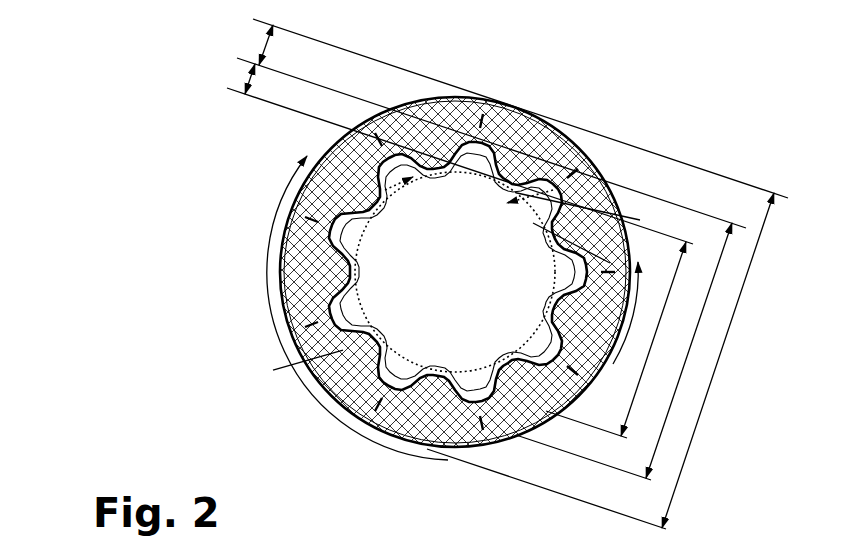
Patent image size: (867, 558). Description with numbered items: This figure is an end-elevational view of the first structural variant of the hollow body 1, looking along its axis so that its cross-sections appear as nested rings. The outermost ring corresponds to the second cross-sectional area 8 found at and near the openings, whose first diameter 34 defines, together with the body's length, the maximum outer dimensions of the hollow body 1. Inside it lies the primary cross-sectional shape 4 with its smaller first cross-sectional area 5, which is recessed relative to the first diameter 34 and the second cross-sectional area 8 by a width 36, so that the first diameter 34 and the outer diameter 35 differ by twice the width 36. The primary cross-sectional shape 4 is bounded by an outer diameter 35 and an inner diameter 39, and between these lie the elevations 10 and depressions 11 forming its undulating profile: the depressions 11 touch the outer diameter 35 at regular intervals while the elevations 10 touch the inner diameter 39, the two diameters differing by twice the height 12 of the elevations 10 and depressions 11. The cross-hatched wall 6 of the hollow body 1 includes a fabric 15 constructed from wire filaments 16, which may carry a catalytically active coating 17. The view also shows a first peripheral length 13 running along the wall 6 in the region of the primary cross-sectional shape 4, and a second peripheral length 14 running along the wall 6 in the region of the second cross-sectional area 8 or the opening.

The hollow body 1 is at (612, 60).
The primary cross-sectional shape 4 is at (400, 350).
The first cross-sectional area 5 is at (355, 411).
The wall 6 is at (457, 103).
The second cross-sectional area 8 is at (582, 147).
The elevations 10 is at (433, 173).
The depressions 11 is at (483, 150).
The height 12 is at (250, 77).
The first peripheral length 13 is at (290, 363).
The second peripheral length 14 is at (263, 298).
The fabric 15 is at (477, 115).
The wire filaments 16 is at (605, 183).
The coating 17 is at (603, 230).
The first diameter 34 is at (667, 473).
The outer diameter 35 is at (657, 420).
The width 36 is at (262, 45).
The inner diameter 39 is at (703, 330).